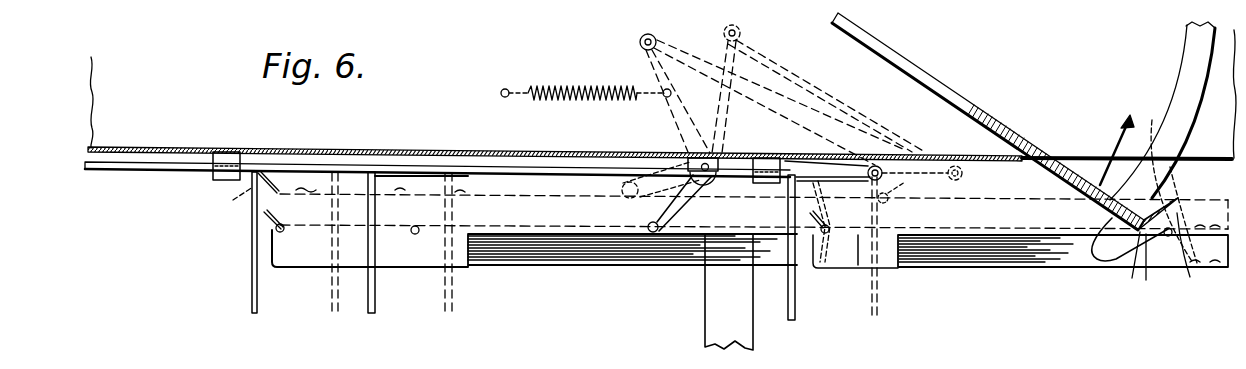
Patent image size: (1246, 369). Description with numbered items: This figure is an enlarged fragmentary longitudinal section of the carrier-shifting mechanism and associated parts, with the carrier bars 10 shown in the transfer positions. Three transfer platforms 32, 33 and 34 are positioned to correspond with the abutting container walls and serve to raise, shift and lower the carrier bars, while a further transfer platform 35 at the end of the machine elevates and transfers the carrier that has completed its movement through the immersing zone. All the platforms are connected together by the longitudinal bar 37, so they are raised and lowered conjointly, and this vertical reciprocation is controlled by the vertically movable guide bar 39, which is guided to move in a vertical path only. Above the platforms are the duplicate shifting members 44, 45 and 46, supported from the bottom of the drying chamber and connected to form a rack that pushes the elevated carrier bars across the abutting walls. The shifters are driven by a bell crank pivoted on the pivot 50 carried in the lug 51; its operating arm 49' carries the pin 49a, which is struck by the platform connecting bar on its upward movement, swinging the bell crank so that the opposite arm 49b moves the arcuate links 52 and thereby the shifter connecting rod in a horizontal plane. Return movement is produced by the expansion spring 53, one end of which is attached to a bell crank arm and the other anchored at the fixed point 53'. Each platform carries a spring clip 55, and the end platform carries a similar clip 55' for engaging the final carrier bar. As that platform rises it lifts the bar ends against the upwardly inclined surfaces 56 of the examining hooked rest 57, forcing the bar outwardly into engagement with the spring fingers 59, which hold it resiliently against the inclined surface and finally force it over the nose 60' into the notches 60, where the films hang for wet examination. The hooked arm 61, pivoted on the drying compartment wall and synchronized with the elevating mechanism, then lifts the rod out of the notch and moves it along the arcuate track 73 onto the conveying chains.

The article (package) being conveyed 10 is at (340, 192).
The transfer platform 32 is at (318, 233).
The transfer platform 33 is at (400, 234).
The transfer platform 34 is at (850, 267).
The transfer platform 35 is at (1181, 240).
The longitudinal bar 37 is at (567, 255).
The vertically movable guide bar 39 is at (718, 330).
The shifting member 44 is at (332, 313).
The shifting member 45 is at (445, 315).
The shifting member 46 is at (873, 318).
The pin 49a is at (648, 225).
The operating arm 49' is at (695, 203).
The opposite arm 49b is at (667, 113).
The pivot 50 is at (723, 160).
The lug 51 is at (700, 152).
The arcuate link 52 is at (842, 115).
The expansion spring 53 is at (590, 76).
The fixed anchor point 53' is at (503, 110).
The spring clip 55 is at (513, 217).
The spring clip 55' is at (1145, 235).
The upwardly inclined surface 56 is at (1133, 245).
The examining hooked rest 57 is at (1088, 244).
The spring finger 59 is at (1170, 178).
The notch 60 is at (1110, 214).
The nose 60' is at (1208, 187).
The hooked arm 61 is at (967, 107).
The arcuate track 73 is at (1192, 68).